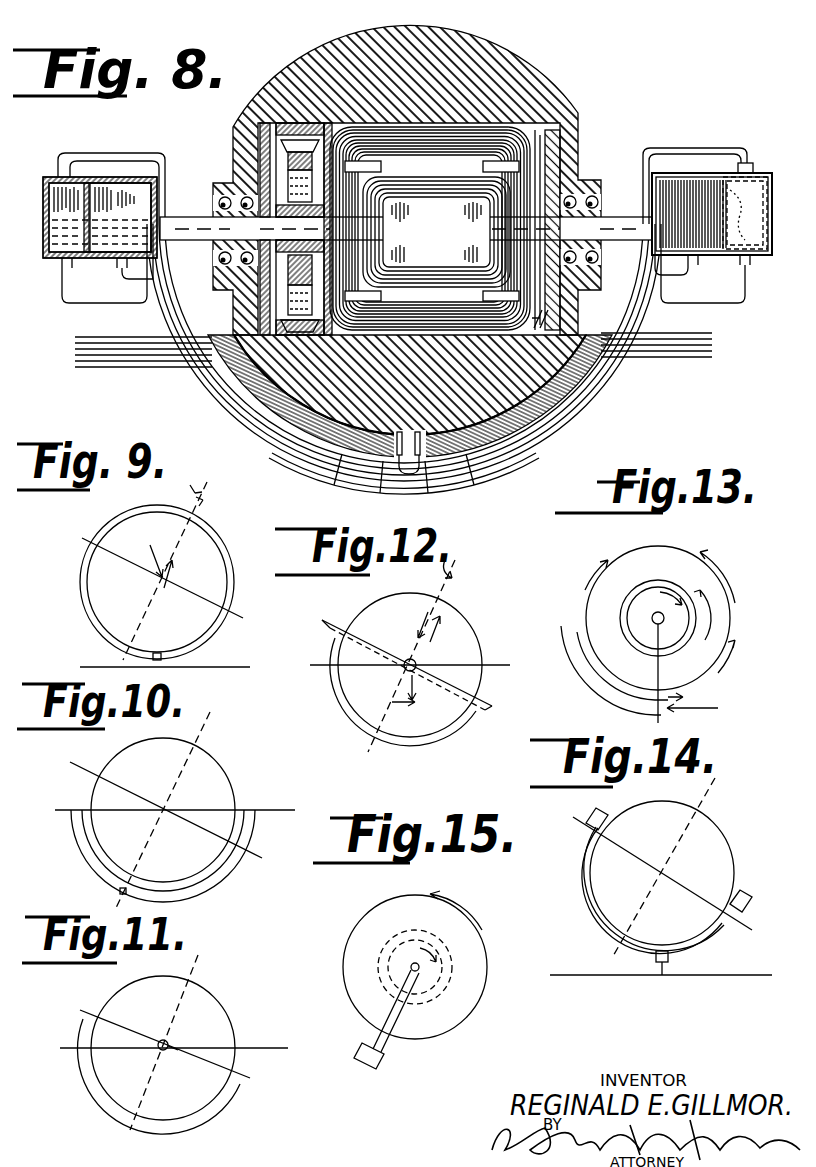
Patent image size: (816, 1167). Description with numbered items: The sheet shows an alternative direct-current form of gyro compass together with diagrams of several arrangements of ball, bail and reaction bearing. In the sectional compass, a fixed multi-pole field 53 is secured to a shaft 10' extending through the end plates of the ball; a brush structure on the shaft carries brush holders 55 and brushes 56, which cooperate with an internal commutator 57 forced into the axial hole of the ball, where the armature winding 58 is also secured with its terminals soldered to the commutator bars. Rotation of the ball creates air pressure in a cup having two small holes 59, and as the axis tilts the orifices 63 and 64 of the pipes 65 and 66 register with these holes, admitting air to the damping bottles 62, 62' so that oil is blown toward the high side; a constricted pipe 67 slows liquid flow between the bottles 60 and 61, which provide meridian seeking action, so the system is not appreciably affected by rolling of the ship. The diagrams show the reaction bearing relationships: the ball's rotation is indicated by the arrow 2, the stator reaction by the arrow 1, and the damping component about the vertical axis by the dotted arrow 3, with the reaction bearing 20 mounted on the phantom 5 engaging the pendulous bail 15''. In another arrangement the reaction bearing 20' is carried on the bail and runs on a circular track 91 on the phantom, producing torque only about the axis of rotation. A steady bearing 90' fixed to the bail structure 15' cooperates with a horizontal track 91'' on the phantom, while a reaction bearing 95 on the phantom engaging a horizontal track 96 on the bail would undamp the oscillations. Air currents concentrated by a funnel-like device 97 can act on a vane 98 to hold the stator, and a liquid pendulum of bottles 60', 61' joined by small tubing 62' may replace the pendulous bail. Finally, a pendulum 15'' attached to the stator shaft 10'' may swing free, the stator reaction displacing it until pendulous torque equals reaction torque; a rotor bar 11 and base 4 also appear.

In FIG. 8, the arrow 1 is at (340, 55).
In FIG. 9, the arrow 1 is at (224, 559).
In FIG. 8, the arrow 2 is at (590, 343).
In FIG. 9, the arrow 2 is at (173, 566).
In FIG. 9, the dotted arrow 3 is at (174, 571).
In FIG. 8, the base 4 is at (669, 357).
In FIG. 9, the phantom 5 is at (222, 667).
In FIG. 8, the shaft 10' is at (406, 210).
In FIG. 15, the stator shaft 10'' is at (415, 965).
In FIG. 8, the rotor bar 11 is at (546, 325).
In FIG. 10, the bail 15' is at (175, 832).
In FIG. 11, the bail 15' is at (174, 1055).
In FIG. 9, the pendulous bail 15'' is at (146, 592).
In FIG. 15, the pendulous bail 15'' is at (397, 1020).
In FIG. 9, the reaction bearing 20 is at (167, 637).
In FIG. 14, the reaction bearing 20 is at (661, 876).
In FIG. 10, the reaction bearing 20' is at (139, 811).
In FIG. 8, the fixed multi-pole field 53 is at (436, 232).
In FIG. 8, the brush holders 55 is at (297, 263).
In FIG. 8, the brushes 56 is at (258, 158).
In FIG. 8, the internal commutator 57 is at (281, 126).
In FIG. 8, the armature winding 58 is at (537, 126).
In FIG. 8, the small holes 59 is at (370, 457).
In FIG. 8, the bottle 60 is at (116, 238).
In FIG. 14, the bottle 60' is at (572, 825).
In FIG. 8, the bottle 61 is at (707, 225).
In FIG. 14, the bottle 61' is at (758, 891).
In FIG. 8, the damping bottle 62 is at (88, 228).
In FIG. 8, the damping bottle 62' is at (760, 191).
In FIG. 14, the damping bottle 62' is at (656, 882).
In FIG. 8, the orifice 63 is at (392, 458).
In FIG. 8, the orifice 64 is at (410, 477).
In FIG. 8, the pipe 65 is at (274, 433).
In FIG. 8, the pipe 66 is at (572, 414).
In FIG. 8, the constricted pipe 67 is at (226, 406).
In FIG. 11, the steady bearing 90' is at (164, 1042).
In FIG. 10, the circular track 91 is at (163, 837).
In FIG. 11, the horizontal track 91'' is at (197, 1033).
In FIG. 12, the reaction bearing 95 is at (409, 658).
In FIG. 12, the horizontal track 96 is at (470, 683).
In FIG. 13, the funnel-like device 97 is at (598, 696).
In FIG. 13, the vane 98 is at (660, 668).